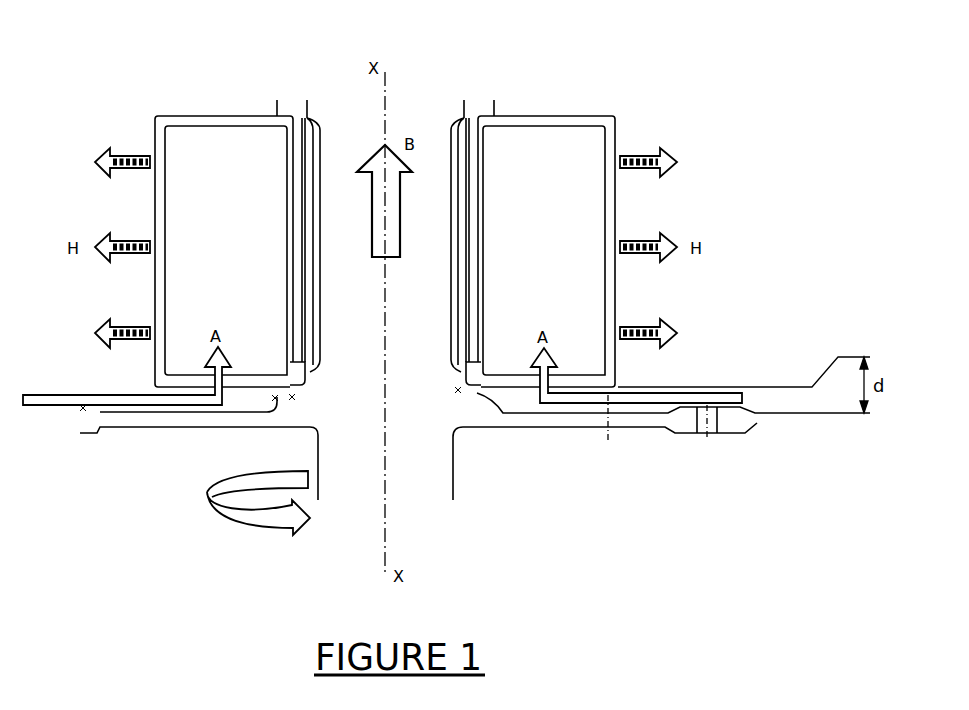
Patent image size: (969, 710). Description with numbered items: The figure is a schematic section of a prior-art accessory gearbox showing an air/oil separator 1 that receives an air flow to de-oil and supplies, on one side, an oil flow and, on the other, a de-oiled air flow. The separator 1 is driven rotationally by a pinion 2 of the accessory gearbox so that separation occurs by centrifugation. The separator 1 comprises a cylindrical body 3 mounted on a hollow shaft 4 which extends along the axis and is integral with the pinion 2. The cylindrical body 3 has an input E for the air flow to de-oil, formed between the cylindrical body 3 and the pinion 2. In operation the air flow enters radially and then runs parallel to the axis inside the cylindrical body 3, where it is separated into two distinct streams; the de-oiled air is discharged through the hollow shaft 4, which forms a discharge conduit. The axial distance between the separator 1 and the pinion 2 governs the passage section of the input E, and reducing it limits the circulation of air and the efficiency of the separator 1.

The air/oil separator 1 is at (413, 201).
The pinion 2 is at (172, 432).
The cylindrical body 3 is at (616, 117).
The hollow shaft 4 is at (312, 196).
The input E is at (666, 389).